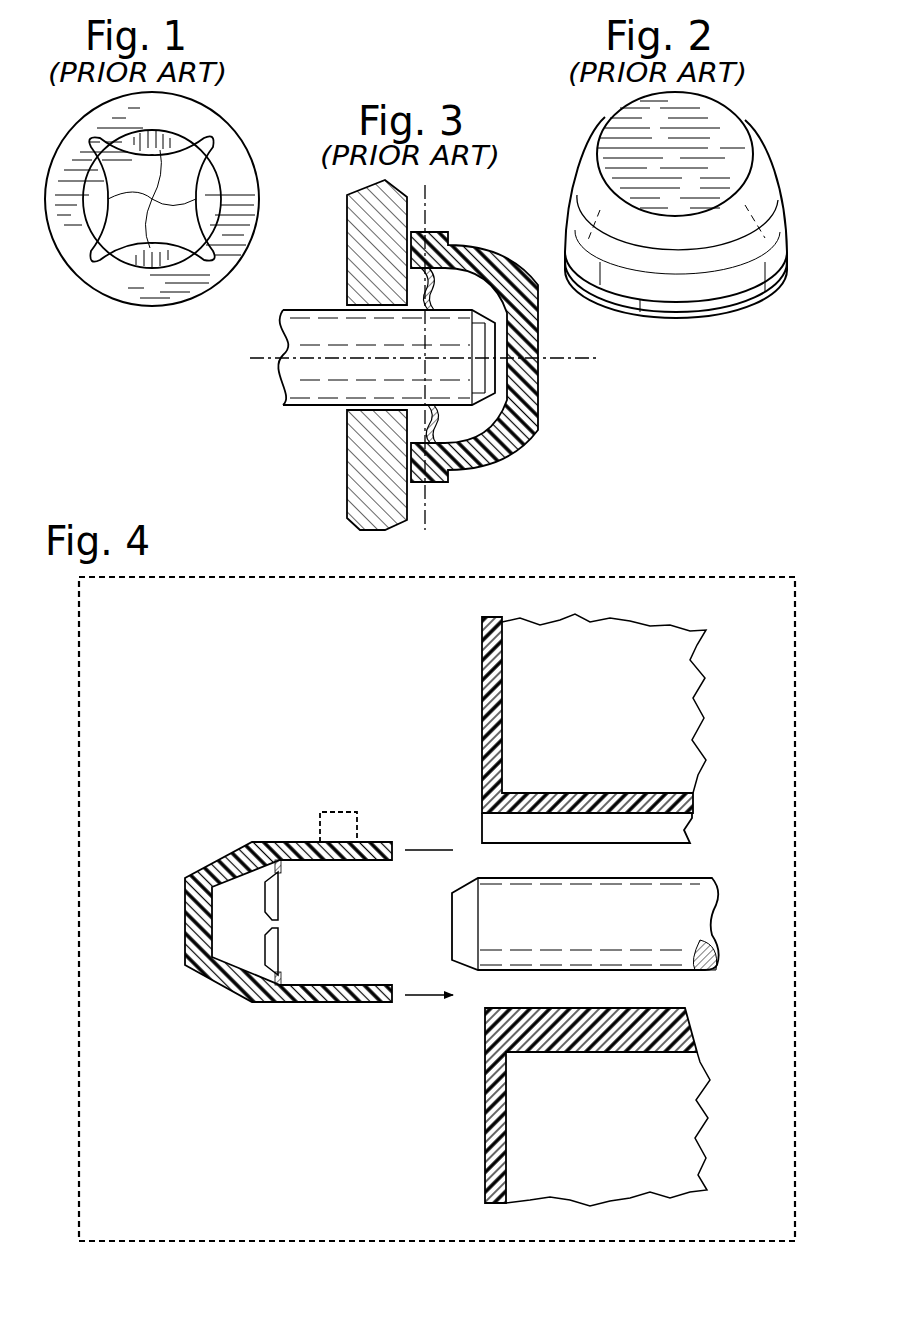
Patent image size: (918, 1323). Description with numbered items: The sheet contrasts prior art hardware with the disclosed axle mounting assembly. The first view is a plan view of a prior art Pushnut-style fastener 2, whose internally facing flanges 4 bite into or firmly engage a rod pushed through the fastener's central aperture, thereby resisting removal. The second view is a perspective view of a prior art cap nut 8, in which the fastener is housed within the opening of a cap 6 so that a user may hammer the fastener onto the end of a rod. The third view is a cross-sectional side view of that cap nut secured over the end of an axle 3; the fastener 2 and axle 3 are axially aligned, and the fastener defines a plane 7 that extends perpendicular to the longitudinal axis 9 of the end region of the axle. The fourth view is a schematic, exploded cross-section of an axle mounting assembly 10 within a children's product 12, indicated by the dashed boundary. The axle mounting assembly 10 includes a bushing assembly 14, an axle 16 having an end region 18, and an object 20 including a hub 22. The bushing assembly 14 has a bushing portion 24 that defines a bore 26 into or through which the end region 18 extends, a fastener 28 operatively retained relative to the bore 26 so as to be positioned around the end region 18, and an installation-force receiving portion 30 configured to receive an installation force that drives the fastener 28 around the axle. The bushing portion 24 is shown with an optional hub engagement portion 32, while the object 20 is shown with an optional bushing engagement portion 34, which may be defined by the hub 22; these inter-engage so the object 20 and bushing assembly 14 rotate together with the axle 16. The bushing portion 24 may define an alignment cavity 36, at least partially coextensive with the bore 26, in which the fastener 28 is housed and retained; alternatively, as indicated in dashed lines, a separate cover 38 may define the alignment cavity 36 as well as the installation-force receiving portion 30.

In FIG. 1, the Pushnut-style fastener 2 is at (152, 197).
In FIG. 3, the Pushnut-style fastener 2 is at (432, 430).
In FIG. 3, the axle 3 is at (312, 406).
In FIG. 1, the internally facing flanges 4 is at (151, 198).
In FIG. 2, the cap 6 is at (725, 110).
In FIG. 3, the cap 6 is at (525, 450).
In FIG. 3, the plane 7 is at (428, 195).
In FIG. 2, the cap nut 8 is at (676, 202).
In FIG. 3, the cap nut 8 is at (499, 357).
In FIG. 3, the longitudinal axis 9 is at (555, 357).
In FIG. 4, the axle mounting assembly 10 is at (251, 640).
In FIG. 4, the children's product 12 is at (748, 575).
In FIG. 4, the bushing assembly 14 is at (241, 776).
In FIG. 4, the axle 16 is at (593, 907).
In FIG. 4, the end region 18 is at (598, 937).
In FIG. 4, the object 20 is at (480, 640).
In FIG. 4, the hub 22 is at (482, 1025).
In FIG. 4, the bushing portion 24 is at (326, 1004).
In FIG. 4, the bore 26 is at (345, 985).
In FIG. 4, the fastener 28 is at (280, 895).
In FIG. 4, the installation-force receiving portion 30 is at (190, 930).
In FIG. 4, the hub engagement portion 32 is at (357, 830).
In FIG. 4, the bushing engagement portion 34 is at (483, 830).
In FIG. 4, the alignment cavity 36 is at (265, 975).
In FIG. 4, the cover 38 is at (318, 840).